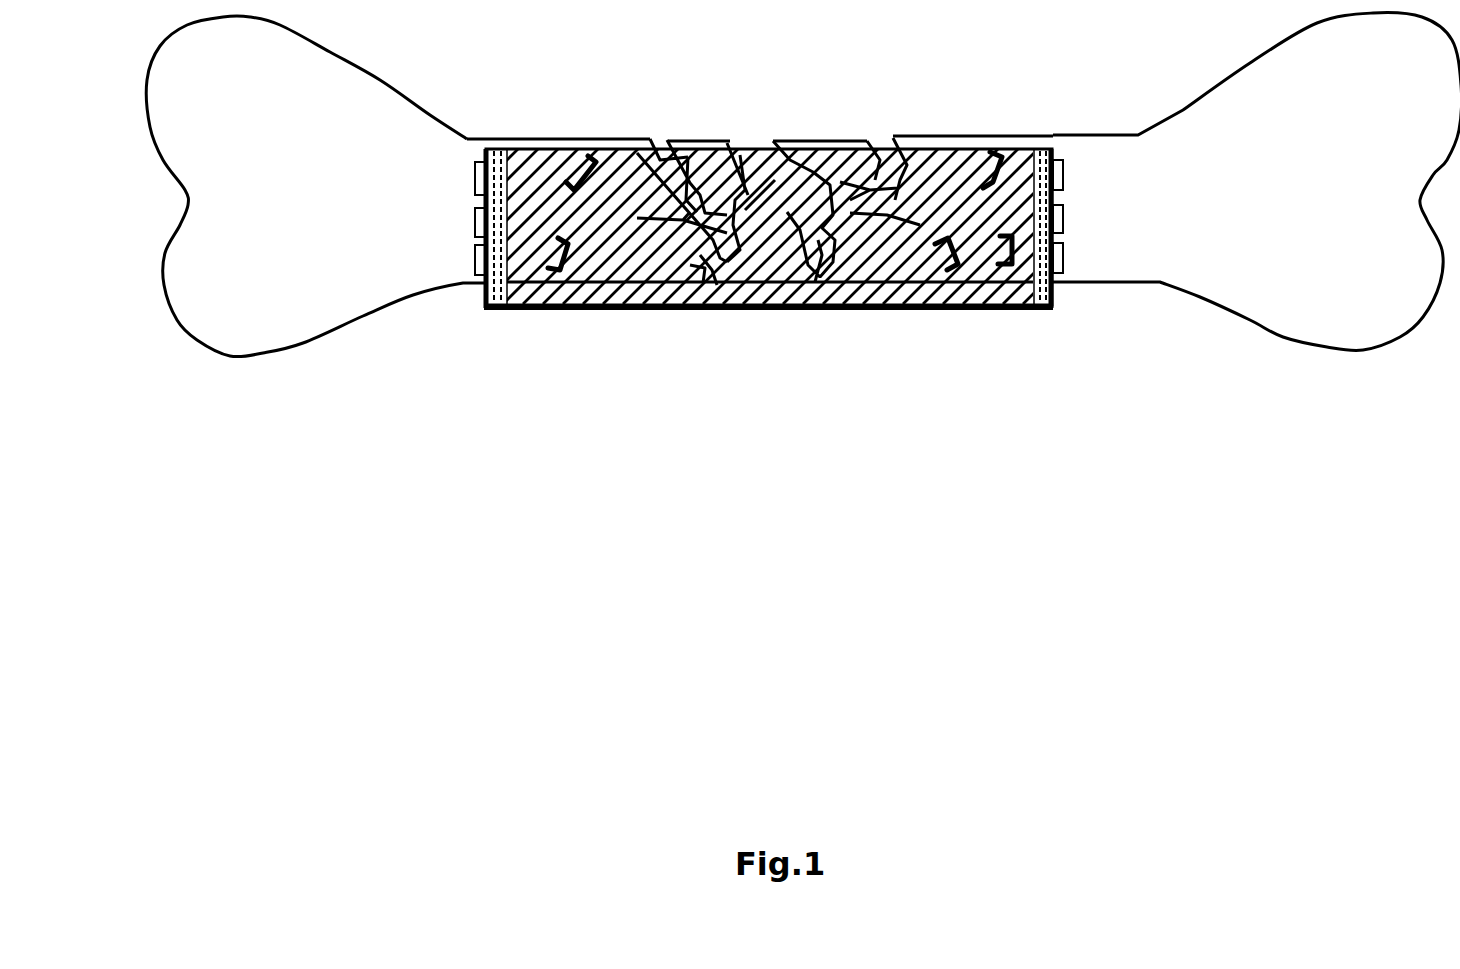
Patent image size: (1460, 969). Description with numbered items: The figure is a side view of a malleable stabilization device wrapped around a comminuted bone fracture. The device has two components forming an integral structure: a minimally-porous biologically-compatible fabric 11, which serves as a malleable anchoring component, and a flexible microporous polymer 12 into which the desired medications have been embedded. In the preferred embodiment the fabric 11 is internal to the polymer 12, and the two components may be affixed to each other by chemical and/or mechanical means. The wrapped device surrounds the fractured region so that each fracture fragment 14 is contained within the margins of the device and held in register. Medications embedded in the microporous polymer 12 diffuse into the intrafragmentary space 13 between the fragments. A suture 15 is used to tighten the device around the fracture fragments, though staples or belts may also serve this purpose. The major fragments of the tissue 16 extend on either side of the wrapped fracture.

The minimally-porous biologically-compatible fabric 11 is at (543, 307).
The flexible microporous polymer 12 is at (643, 307).
The intrafragmentary space 13 is at (722, 143).
The fracture fragment 14 is at (810, 210).
The suture 15 is at (1058, 280).
The major fragments of the tissue 16 is at (1162, 218).